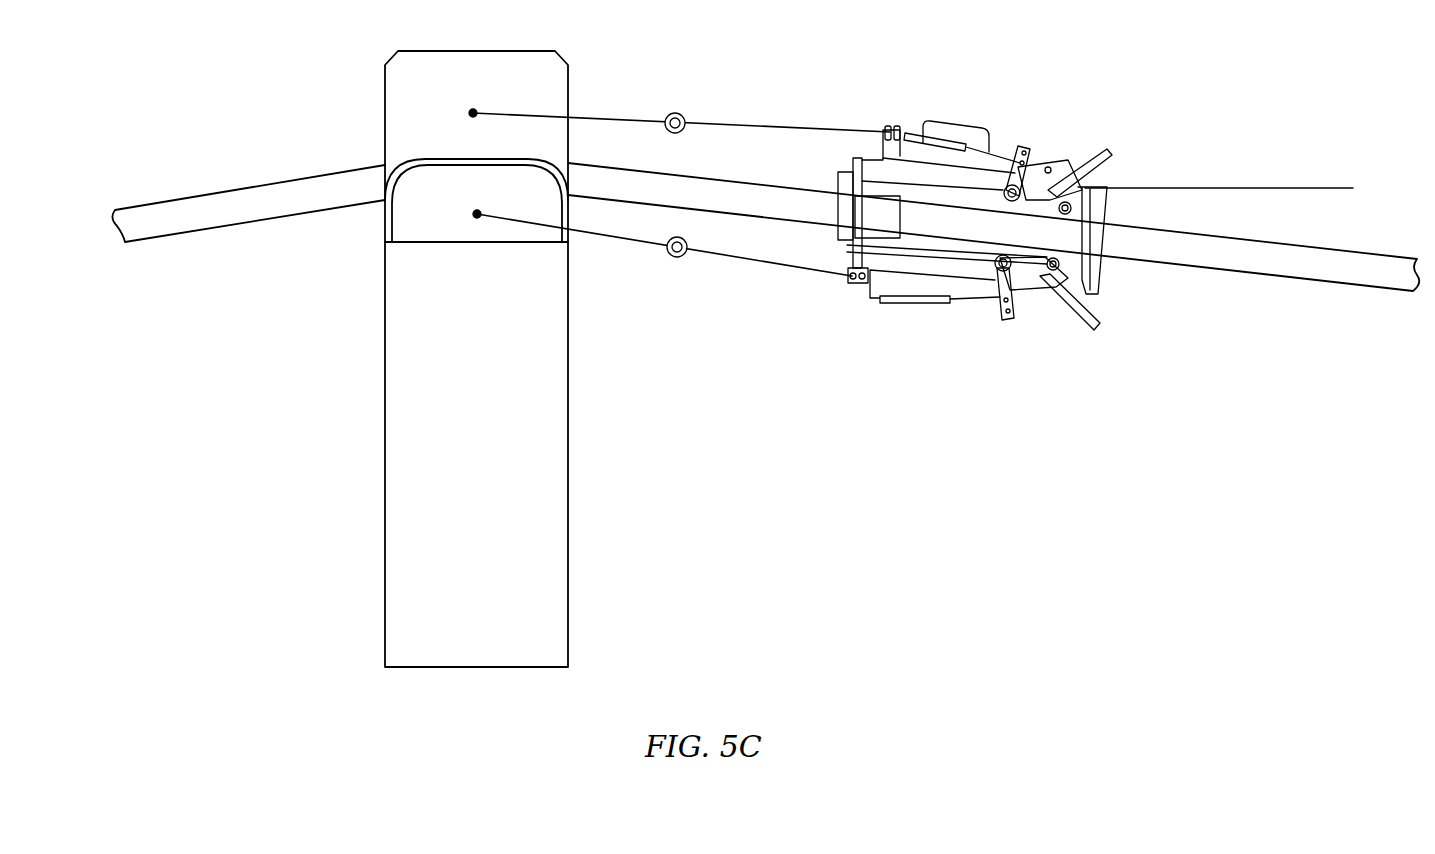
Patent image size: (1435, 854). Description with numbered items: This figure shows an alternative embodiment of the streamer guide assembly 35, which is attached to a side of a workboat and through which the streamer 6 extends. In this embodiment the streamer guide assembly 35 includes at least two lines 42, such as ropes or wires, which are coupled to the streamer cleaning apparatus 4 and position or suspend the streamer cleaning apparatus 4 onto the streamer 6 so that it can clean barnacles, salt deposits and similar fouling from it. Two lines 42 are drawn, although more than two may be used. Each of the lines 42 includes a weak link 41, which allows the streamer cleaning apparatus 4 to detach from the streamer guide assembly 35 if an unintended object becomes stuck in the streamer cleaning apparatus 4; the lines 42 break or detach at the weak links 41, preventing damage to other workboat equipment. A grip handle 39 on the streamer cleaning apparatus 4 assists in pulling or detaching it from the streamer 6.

The streamer cleaning apparatus 4 is at (1095, 195).
The streamer 6 is at (177, 233).
The streamer guide assembly 35 is at (410, 392).
The grip handle 39 is at (958, 122).
The weak link 41 is at (681, 113).
The lines 42 is at (781, 127).